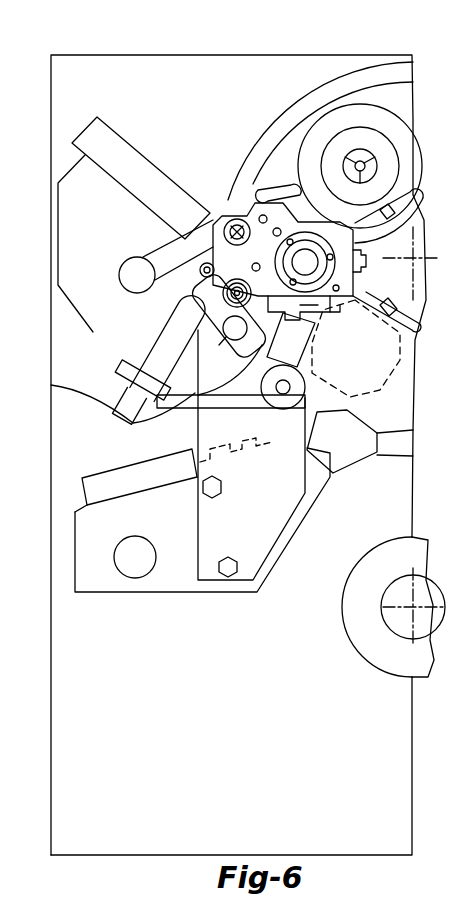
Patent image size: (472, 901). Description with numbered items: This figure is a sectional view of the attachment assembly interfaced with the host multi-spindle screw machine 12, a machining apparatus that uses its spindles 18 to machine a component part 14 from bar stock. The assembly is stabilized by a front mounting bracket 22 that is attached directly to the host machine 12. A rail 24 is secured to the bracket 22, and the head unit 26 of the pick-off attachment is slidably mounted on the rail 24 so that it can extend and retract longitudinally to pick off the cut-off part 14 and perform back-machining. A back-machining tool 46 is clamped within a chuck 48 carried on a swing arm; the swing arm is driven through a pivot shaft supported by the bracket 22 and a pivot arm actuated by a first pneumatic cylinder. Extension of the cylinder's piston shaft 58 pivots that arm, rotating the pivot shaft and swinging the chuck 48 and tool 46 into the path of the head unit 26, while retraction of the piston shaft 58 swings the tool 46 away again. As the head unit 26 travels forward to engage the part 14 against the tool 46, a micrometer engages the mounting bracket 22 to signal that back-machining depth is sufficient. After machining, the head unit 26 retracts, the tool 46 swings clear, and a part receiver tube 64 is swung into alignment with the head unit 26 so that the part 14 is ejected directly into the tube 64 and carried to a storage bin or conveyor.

The multi-spindle screw machine 12 is at (283, 112).
The component part 14 is at (361, 160).
The spindle 18 is at (345, 135).
The front mounting bracket 22 is at (205, 518).
The rail 24 is at (110, 398).
The head unit 26 is at (410, 218).
The back-machining tool 46 is at (229, 220).
The chuck 48 is at (236, 222).
The piston shaft 58 is at (131, 270).
The part receiver tube 64 is at (152, 345).